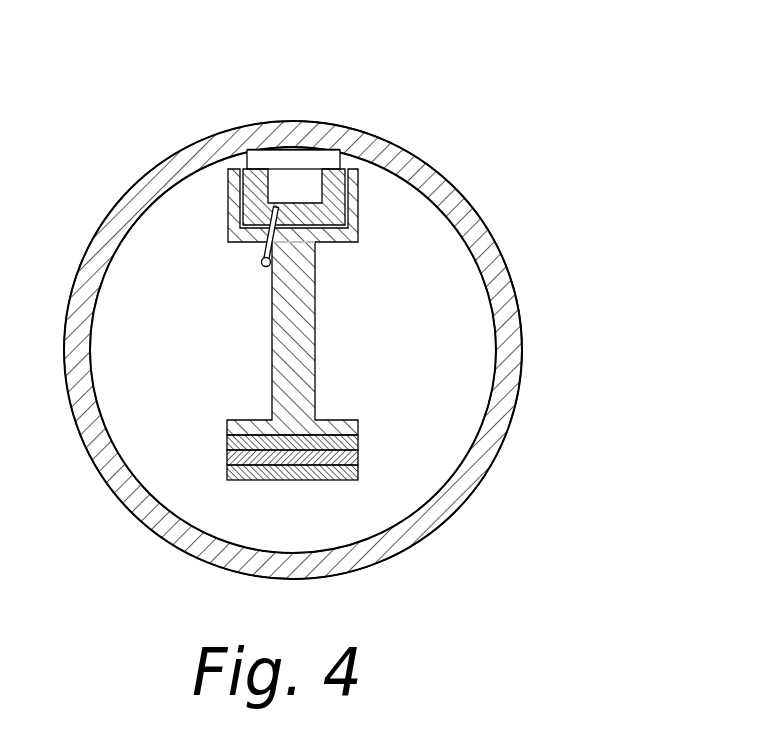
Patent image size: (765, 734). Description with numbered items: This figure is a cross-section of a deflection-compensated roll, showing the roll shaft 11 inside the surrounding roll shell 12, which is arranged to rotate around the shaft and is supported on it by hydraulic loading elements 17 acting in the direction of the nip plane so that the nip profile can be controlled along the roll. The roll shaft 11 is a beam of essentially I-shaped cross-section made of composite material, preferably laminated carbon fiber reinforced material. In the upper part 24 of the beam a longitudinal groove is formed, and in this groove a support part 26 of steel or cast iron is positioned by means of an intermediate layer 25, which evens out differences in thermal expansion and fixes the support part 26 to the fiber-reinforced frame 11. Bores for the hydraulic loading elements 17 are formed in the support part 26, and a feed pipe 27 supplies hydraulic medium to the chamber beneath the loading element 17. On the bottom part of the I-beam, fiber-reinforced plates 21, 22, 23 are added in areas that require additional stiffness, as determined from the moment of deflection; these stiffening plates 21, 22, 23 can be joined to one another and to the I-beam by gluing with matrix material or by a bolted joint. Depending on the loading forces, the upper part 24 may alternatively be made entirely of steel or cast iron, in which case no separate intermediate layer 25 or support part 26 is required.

The roll shaft 11 is at (303, 316).
The roll shell 12 is at (500, 254).
The hydraulic loading element 17 is at (297, 155).
The fiber-reinforced plate 21 is at (358, 443).
The fiber-reinforced plate 22 is at (358, 458).
The fiber-reinforced plate 23 is at (358, 477).
The upper part of the beam 24 is at (345, 225).
The intermediate layer 25 is at (357, 180).
The support part 26 is at (336, 176).
The feed pipe 27 is at (260, 250).